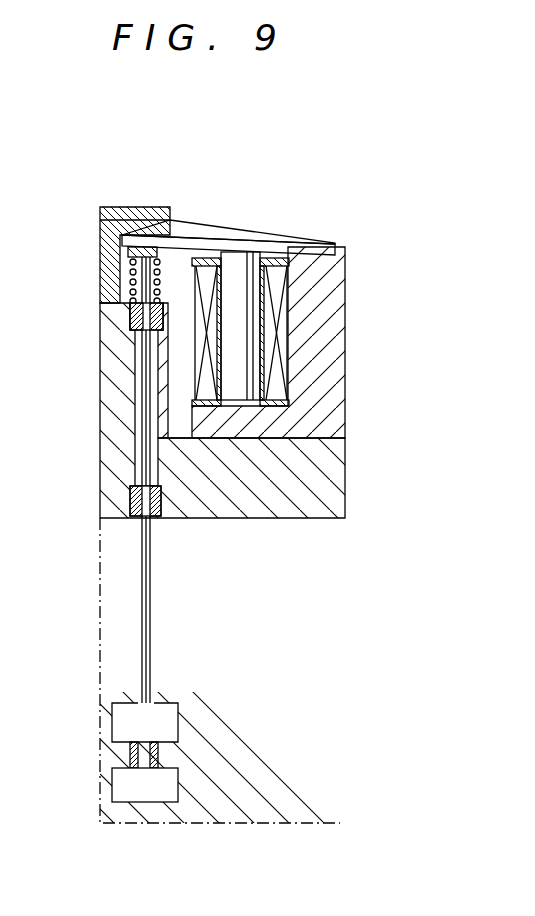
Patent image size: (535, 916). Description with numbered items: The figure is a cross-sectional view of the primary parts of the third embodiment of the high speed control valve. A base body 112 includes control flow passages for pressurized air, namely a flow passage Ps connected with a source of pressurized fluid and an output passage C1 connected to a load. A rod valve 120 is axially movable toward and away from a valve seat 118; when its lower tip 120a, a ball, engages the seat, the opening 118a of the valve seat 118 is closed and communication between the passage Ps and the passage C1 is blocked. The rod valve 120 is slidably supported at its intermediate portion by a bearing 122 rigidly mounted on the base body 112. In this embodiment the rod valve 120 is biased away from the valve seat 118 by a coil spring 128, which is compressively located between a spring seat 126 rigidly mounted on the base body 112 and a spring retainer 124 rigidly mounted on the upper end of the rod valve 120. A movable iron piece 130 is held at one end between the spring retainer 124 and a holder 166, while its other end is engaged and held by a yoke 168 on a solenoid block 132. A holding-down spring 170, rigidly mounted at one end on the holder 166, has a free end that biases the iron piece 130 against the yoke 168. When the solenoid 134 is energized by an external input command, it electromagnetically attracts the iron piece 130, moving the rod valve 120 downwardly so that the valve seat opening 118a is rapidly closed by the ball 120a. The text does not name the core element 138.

The holder 166 is at (158, 226).
The movable iron piece 130 is at (198, 238).
The holding-down spring 170 is at (263, 232).
The spring retainer 124 is at (130, 257).
The coil spring 128 is at (130, 283).
The solenoid 134 is at (197, 297).
The magnet core 138 is at (240, 283).
The yoke 168 is at (332, 310).
The solenoid block 132 is at (285, 402).
The spring seat 126 is at (130, 318).
The bearing 122 is at (130, 500).
The base body 112 is at (272, 510).
The rod valve 120 is at (152, 611).
The lower tip 120a is at (153, 727).
The flow passage Ps is at (122, 723).
The opening 118a is at (158, 758).
The valve seat 118 is at (130, 757).
The output passage C1 is at (111, 810).